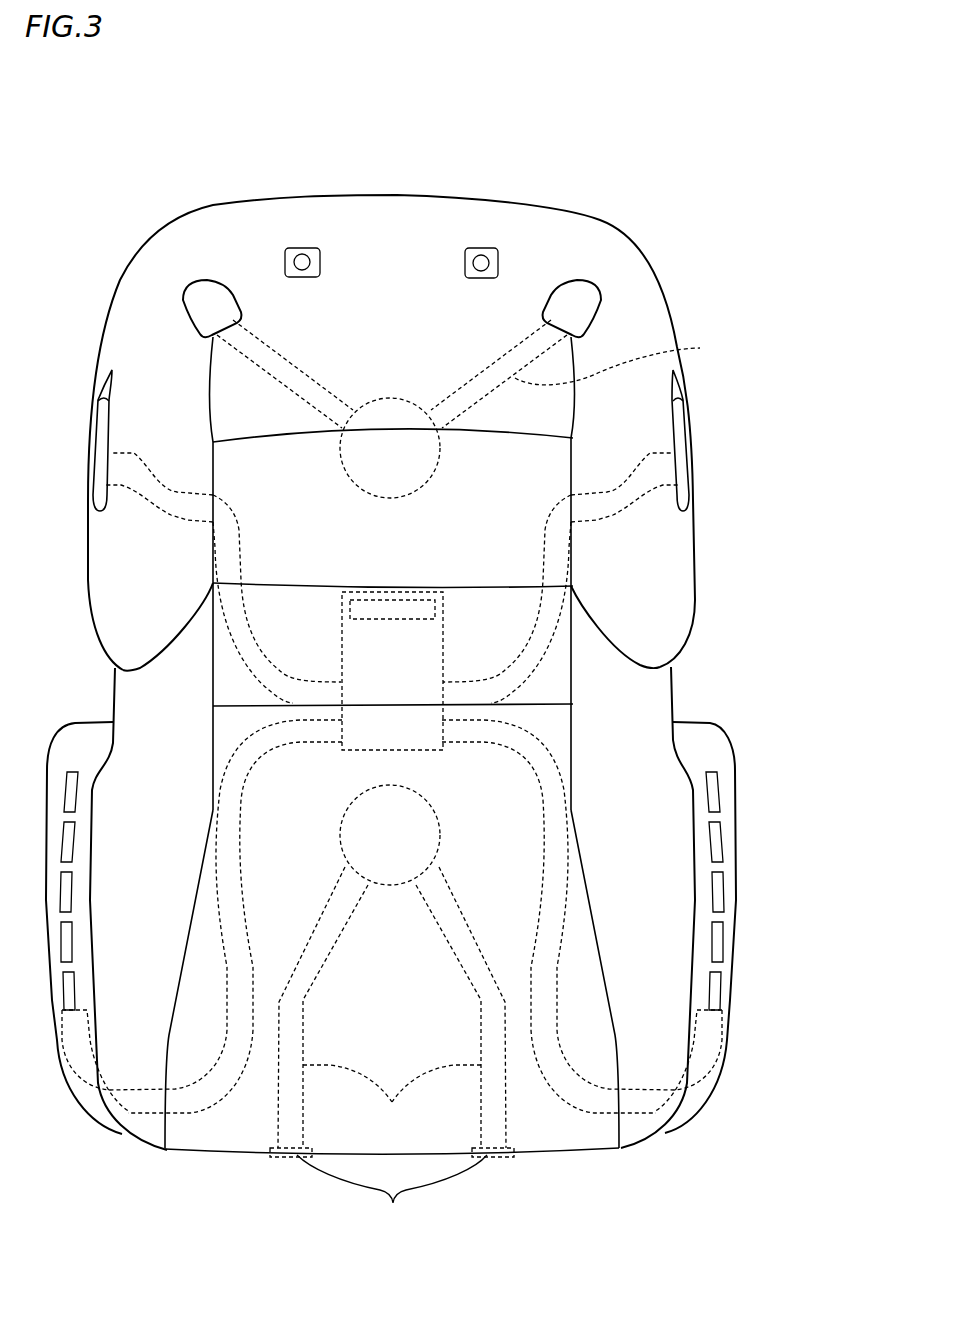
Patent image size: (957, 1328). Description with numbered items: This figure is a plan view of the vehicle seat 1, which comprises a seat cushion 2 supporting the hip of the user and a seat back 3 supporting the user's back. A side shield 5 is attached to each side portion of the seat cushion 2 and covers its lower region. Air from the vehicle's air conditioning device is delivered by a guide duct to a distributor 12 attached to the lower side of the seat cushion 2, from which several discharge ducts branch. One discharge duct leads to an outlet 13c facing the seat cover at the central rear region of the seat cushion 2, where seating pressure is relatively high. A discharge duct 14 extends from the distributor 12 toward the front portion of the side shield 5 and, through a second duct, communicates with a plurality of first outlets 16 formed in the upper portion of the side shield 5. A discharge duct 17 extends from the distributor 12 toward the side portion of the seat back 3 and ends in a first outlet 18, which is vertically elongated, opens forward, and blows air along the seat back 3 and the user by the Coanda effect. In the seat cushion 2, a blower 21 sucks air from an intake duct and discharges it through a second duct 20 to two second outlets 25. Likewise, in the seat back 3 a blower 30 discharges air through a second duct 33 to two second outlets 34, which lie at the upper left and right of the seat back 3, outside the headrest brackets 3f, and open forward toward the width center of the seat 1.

The vehicle seat 1 is at (159, 163).
The seat cushion 2 is at (98, 692).
The seat back 3 is at (106, 312).
The headrest brackets 3f is at (493, 245).
The side shield 5 is at (737, 780).
The distributor 12 is at (448, 653).
The outlet 13c is at (420, 607).
The discharge duct 14 is at (562, 907).
The first outlets 16 is at (708, 1092).
The discharge duct 17 is at (613, 515).
The first outlet 18 is at (682, 430).
The second duct 20 is at (392, 1007).
The blower 21 is at (397, 887).
The second outlets 25 is at (392, 1193).
The blower 30 is at (400, 398).
The second duct 33 is at (626, 360).
The second outlets 34 is at (583, 297).